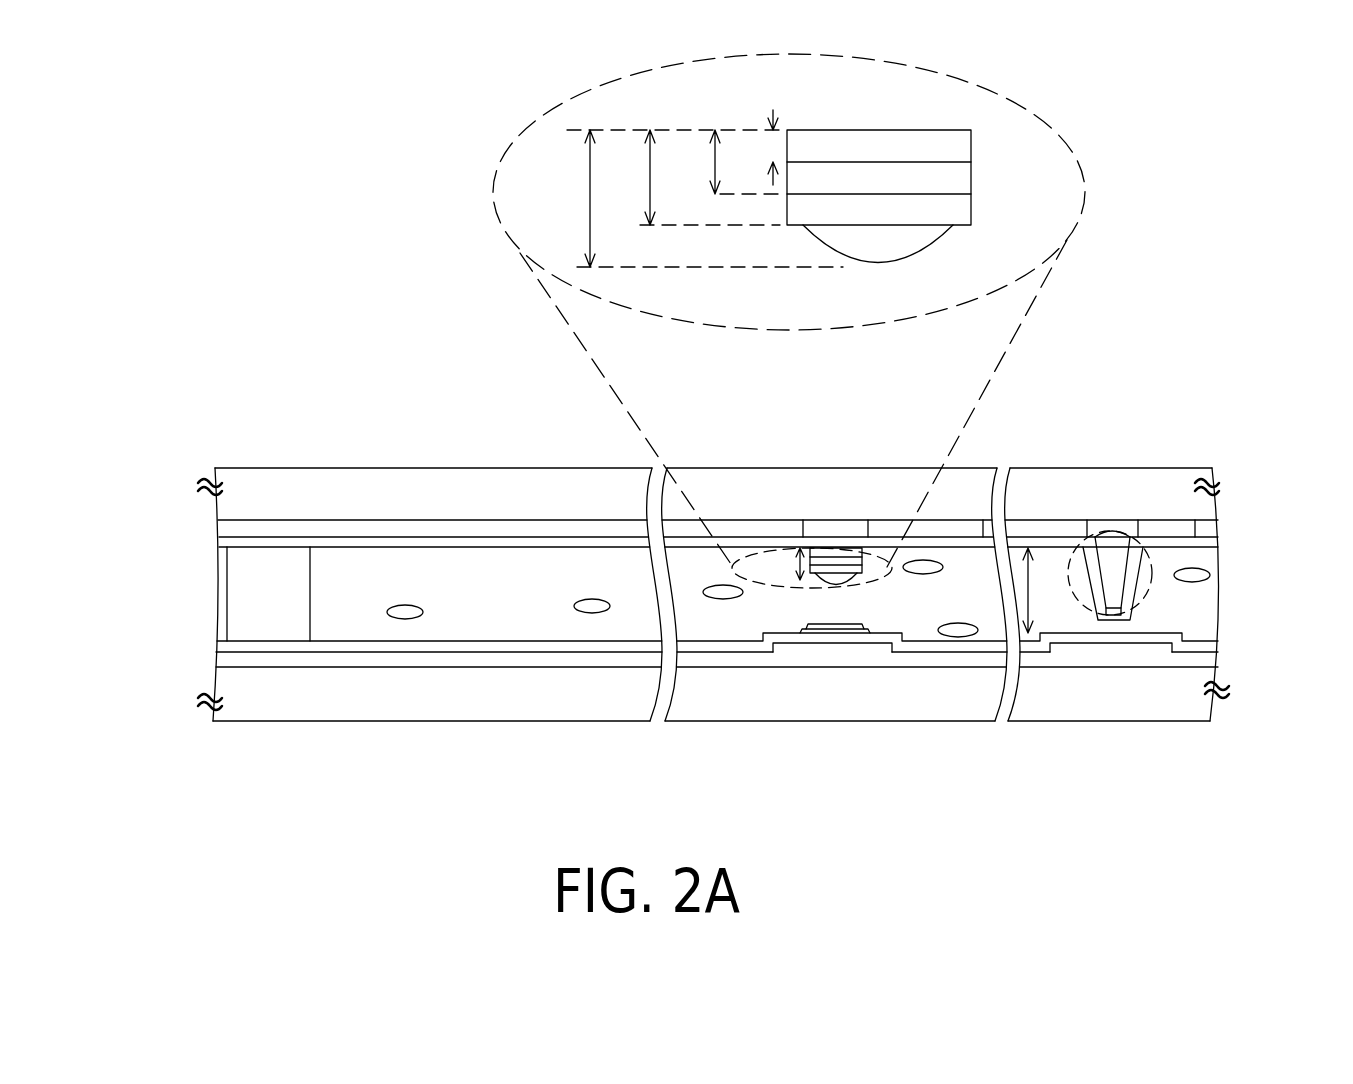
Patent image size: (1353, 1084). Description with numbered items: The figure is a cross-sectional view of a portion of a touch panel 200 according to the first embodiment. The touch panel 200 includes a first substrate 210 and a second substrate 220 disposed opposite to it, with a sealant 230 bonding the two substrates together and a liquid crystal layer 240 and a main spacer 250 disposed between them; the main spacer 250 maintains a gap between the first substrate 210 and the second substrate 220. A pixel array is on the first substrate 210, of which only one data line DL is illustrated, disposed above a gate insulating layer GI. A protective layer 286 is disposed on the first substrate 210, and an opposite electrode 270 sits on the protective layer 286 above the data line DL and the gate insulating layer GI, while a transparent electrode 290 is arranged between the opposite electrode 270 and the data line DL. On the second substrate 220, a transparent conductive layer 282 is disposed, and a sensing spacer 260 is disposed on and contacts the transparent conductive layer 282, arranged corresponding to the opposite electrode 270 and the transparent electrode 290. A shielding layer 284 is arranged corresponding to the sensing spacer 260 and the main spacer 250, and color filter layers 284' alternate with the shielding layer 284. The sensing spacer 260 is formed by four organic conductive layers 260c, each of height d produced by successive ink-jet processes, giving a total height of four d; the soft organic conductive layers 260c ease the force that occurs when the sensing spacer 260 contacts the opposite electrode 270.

The touch panel 200 is at (1312, 787).
The first substrate 210 is at (227, 687).
The second substrate 220 is at (227, 513).
The sealant 230 is at (237, 605).
The liquid crystal layer 240 is at (377, 603).
The main spacer 250 is at (1068, 560).
The sensing spacer 260 is at (829, 316).
The organic conductive layers 260c is at (960, 148).
The opposite electrode 270 is at (800, 627).
The transparent conductive layer 282 is at (227, 543).
The shielding layer 284 is at (965, 459).
The color filter layers 284' is at (1027, 459).
The protective layer 286 is at (227, 652).
The transparent electrode 290 is at (870, 630).
The data line DL is at (837, 650).
The gate insulating layer GI is at (1210, 662).